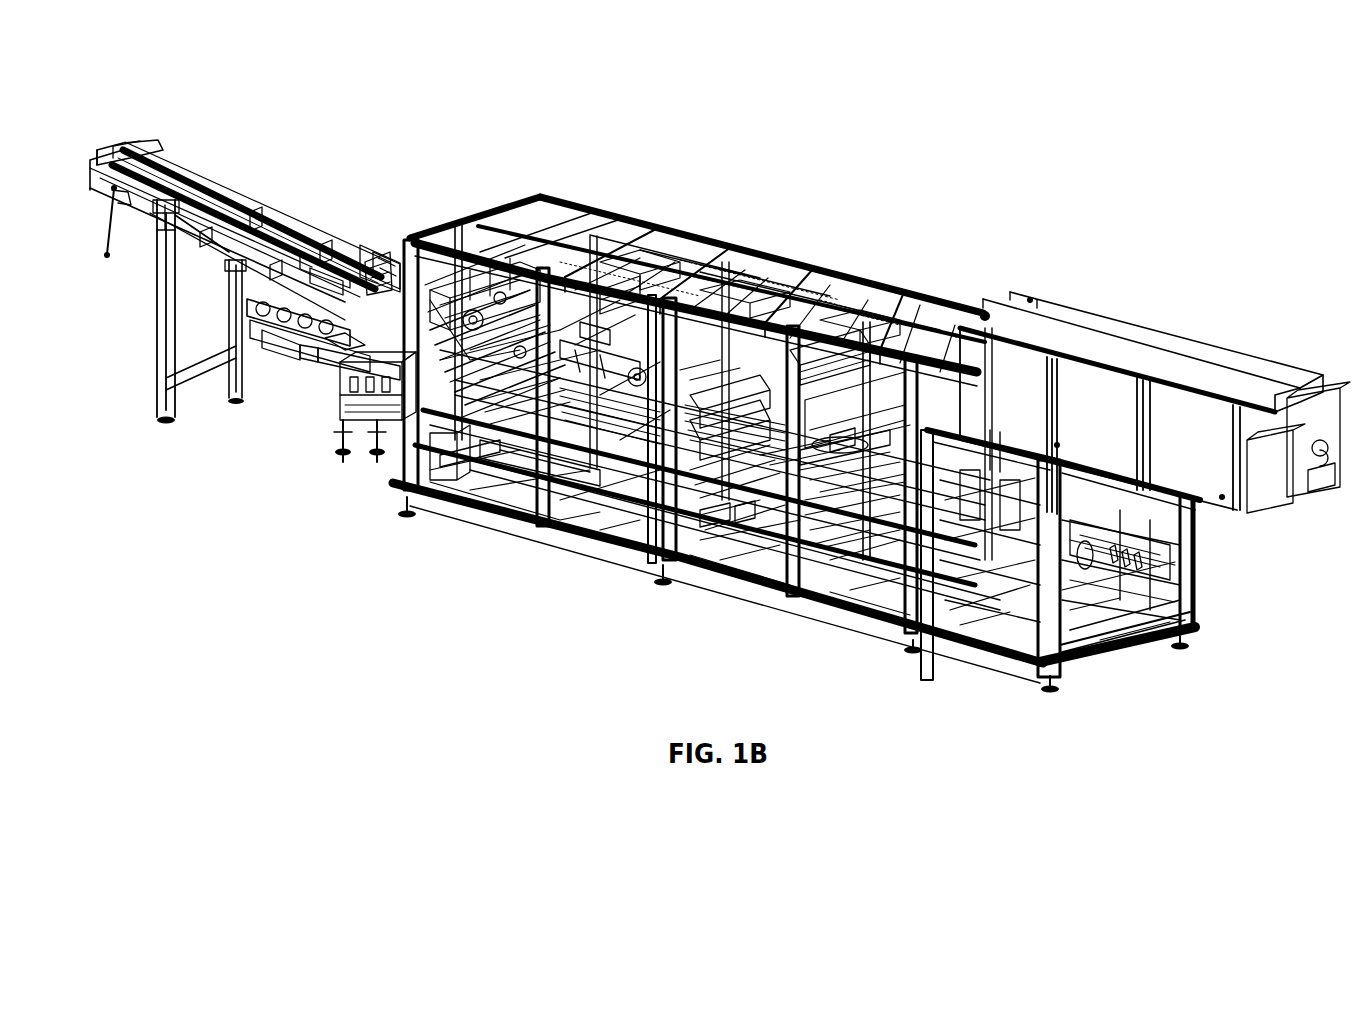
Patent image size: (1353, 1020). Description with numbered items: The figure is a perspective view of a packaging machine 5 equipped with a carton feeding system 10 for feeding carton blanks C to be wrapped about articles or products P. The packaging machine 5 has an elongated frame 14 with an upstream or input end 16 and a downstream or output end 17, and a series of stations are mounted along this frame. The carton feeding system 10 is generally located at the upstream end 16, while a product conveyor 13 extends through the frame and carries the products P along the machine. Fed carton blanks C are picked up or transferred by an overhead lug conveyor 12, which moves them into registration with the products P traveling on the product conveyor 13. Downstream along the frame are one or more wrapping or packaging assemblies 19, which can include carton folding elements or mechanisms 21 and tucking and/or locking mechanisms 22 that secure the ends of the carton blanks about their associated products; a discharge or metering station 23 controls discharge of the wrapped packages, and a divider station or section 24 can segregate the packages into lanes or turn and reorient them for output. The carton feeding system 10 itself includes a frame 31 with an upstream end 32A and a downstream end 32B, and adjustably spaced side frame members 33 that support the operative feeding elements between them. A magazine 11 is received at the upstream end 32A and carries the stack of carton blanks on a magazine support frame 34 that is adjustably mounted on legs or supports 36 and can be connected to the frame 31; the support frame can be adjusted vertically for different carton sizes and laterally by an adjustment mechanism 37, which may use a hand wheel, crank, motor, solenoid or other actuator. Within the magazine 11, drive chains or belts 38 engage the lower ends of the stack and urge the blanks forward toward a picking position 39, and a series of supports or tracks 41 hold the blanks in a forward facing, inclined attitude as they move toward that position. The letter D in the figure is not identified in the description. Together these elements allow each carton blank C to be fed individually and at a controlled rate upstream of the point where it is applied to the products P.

The packaging machine 5 is at (582, 192).
The carton feeding system 10 is at (376, 463).
The magazine 11 is at (252, 181).
The overhead lug conveyor 12 is at (761, 407).
The product conveyor 13 is at (244, 322).
The frame 14 is at (813, 608).
The upstream or input end 16 is at (300, 350).
The downstream or output end 17 is at (1190, 558).
The wrapping or packaging assemblies 19 is at (822, 410).
The carton folding elements or mechanisms 21 is at (698, 402).
The tucking and/or locking mechanisms 22 is at (817, 427).
The discharge or metering station 23 is at (846, 444).
The divider station or section 24 is at (1017, 493).
The frame 31 is at (327, 356).
The upstream end 32A is at (375, 250).
The downstream end 32B is at (619, 356).
The side frame members 33 is at (338, 392).
The magazine support frame 34 is at (214, 252).
The legs or supports 36 is at (155, 304).
The adjustment mechanism 37 is at (118, 210).
The drive chains or belts 38 is at (108, 157).
The picking position 39 is at (333, 225).
The supports or tracks 41 is at (228, 197).
The carton blank C is at (555, 320).
The conveying direction D is at (500, 455).
The products P is at (298, 264).